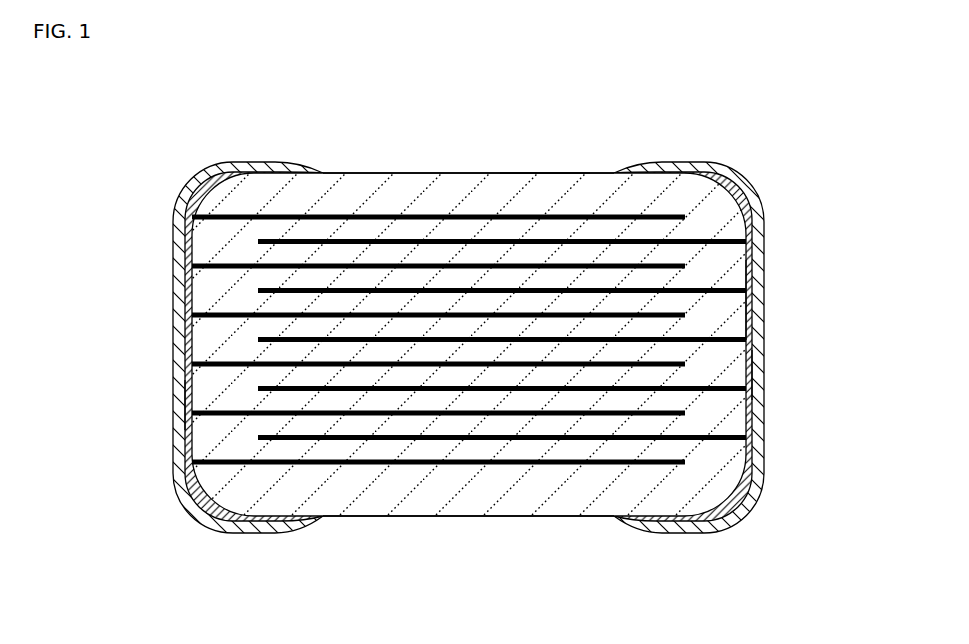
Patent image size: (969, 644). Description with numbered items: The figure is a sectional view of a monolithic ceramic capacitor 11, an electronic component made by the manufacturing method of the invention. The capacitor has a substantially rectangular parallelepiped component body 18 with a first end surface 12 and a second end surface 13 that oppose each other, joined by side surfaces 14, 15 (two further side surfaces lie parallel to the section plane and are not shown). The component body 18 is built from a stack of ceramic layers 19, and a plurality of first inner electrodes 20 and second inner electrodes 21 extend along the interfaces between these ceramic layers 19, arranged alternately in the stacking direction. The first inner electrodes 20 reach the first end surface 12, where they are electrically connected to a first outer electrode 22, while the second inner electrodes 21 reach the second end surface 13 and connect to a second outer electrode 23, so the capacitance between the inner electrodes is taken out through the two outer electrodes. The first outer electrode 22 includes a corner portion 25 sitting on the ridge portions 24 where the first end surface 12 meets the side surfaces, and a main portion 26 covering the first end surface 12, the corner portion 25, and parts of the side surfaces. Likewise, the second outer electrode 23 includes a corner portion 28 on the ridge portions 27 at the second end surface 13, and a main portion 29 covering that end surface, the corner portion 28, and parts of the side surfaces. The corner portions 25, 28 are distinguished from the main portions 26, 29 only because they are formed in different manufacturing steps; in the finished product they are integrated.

The monolithic ceramic capacitor 11 is at (329, 61).
The first end surface 12 is at (190, 353).
The second end surface 13 is at (748, 299).
The side surface 14 is at (468, 172).
The side surface 15 is at (425, 518).
The component body 18 is at (543, 165).
The ceramic layers 19 is at (538, 428).
The first inner electrodes 20 is at (385, 262).
The second inner electrodes 21 is at (365, 388).
The first outer electrode 22 is at (196, 310).
The second outer electrode 23 is at (731, 366).
The ridge portions 24 is at (218, 207).
The corner portion 25 is at (236, 162).
The main portion 26 is at (190, 404).
The ridge portions 27 is at (717, 507).
The corner portion 28 is at (740, 493).
The main portion 29 is at (757, 378).